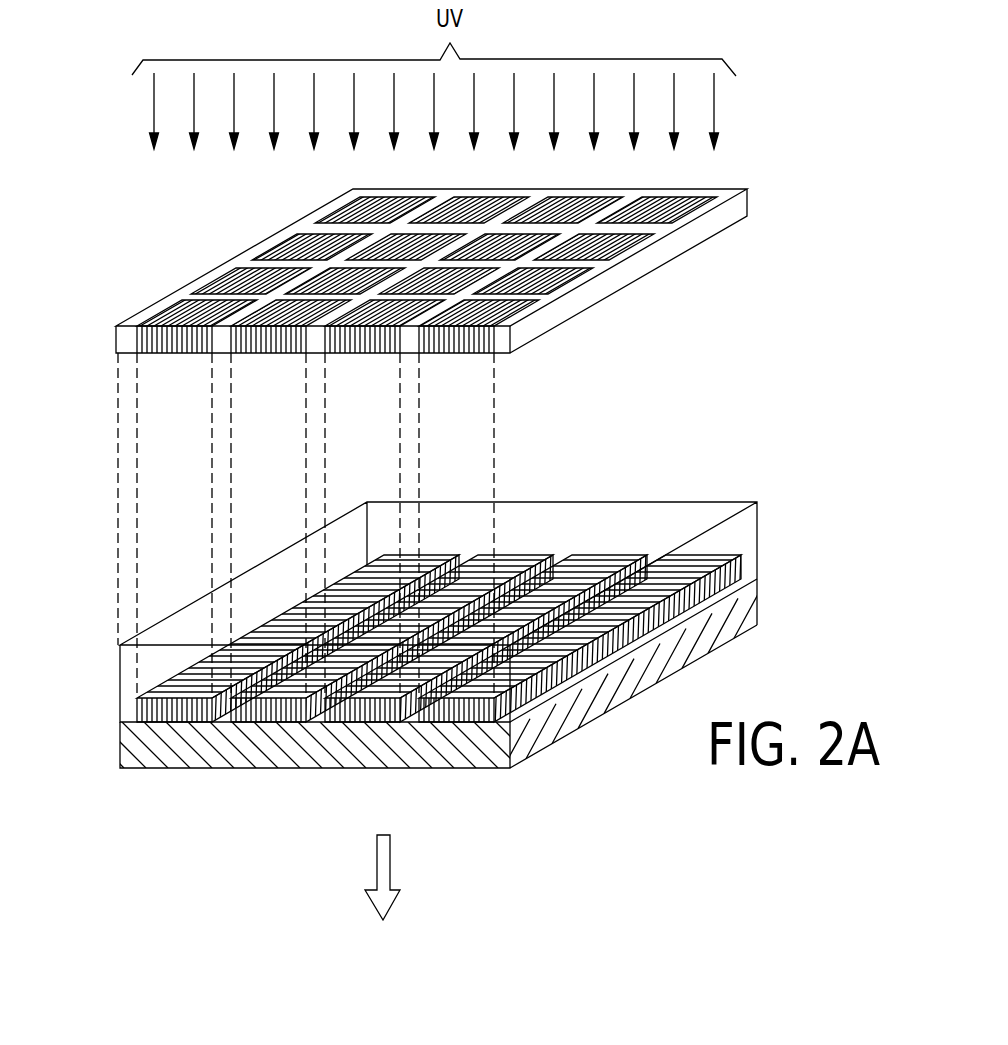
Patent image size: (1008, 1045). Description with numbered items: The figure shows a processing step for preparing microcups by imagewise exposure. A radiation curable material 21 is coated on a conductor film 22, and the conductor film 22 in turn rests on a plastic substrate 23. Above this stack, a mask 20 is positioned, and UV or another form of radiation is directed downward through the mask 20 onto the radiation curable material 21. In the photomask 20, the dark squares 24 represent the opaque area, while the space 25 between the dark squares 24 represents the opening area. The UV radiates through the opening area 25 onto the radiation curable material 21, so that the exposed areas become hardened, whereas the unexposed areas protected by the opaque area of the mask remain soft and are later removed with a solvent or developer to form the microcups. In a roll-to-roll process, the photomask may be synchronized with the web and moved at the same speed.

The mask 20 is at (431, 271).
The radiation curable material 21 is at (130, 658).
The conductor film 22 is at (130, 704).
The plastic substrate 23 is at (130, 748).
The dark squares 24 is at (247, 277).
The space 25 is at (208, 298).